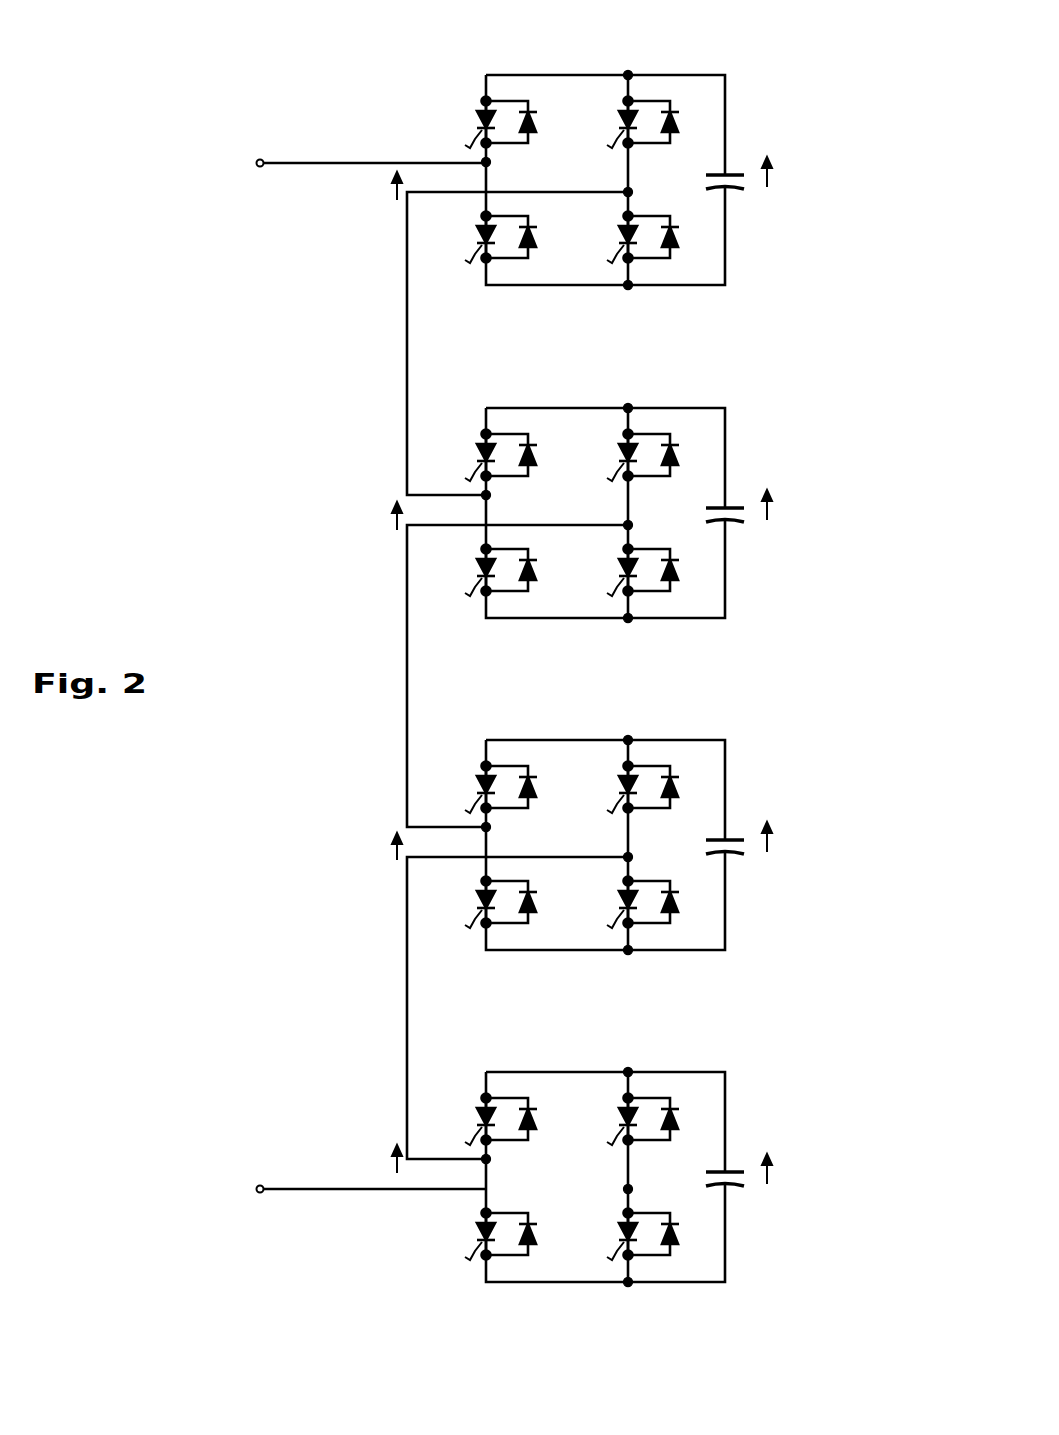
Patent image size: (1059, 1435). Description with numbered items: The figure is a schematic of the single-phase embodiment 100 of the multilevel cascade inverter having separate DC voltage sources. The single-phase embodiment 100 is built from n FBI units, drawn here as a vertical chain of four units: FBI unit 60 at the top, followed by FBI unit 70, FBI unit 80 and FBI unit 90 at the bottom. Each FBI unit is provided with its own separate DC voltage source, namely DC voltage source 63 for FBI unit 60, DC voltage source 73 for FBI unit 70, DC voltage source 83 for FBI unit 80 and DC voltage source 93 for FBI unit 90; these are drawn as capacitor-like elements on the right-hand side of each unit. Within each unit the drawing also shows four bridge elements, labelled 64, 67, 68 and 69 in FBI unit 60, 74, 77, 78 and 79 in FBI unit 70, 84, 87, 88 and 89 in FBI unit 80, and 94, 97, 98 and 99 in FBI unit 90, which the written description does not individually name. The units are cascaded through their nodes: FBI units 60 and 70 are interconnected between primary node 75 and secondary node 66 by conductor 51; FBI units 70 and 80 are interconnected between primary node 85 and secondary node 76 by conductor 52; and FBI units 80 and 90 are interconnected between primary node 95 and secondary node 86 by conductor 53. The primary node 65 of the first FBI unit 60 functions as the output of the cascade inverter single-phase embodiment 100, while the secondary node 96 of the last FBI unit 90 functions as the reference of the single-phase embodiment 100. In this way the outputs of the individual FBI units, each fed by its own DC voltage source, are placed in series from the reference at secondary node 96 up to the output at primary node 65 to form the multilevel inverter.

The single-phase embodiment 100 is at (291, 373).
The conductor 51 is at (407, 351).
The conductor 52 is at (407, 682).
The conductor 53 is at (407, 1015).
The FBI unit 60 is at (733, 108).
The DC voltage source 63 is at (737, 193).
The switching device 64 is at (478, 122).
The primary node 65 is at (490, 165).
The secondary node 66 is at (632, 193).
The switching device 67 is at (478, 238).
The switching device 68 is at (620, 122).
The switching device 69 is at (620, 238).
The FBI unit 70 is at (733, 441).
The DC voltage source 73 is at (737, 526).
The switching device 74 is at (478, 455).
The primary node 75 is at (490, 498).
The secondary node 76 is at (632, 526).
The switching device 77 is at (478, 571).
The switching device 78 is at (620, 455).
The switching device 79 is at (620, 571).
The FBI unit 80 is at (733, 773).
The DC voltage source 83 is at (737, 858).
The switching device 84 is at (478, 787).
The primary node 85 is at (490, 830).
The secondary node 86 is at (632, 858).
The switching device 87 is at (478, 903).
The switching device 88 is at (620, 787).
The switching device 89 is at (620, 903).
The FBI unit 90 is at (733, 1105).
The DC voltage source 93 is at (737, 1190).
The switching device 94 is at (478, 1119).
The primary node 95 is at (490, 1162).
The secondary node 96 is at (632, 1190).
The switching device 97 is at (478, 1235).
The switching device 98 is at (620, 1119).
The switching device 99 is at (620, 1235).